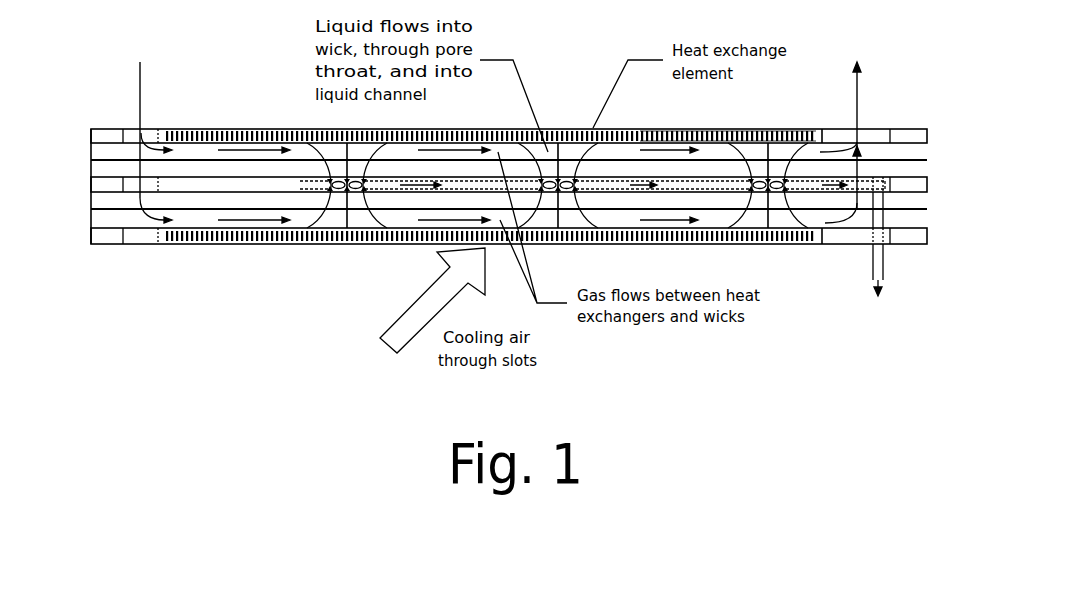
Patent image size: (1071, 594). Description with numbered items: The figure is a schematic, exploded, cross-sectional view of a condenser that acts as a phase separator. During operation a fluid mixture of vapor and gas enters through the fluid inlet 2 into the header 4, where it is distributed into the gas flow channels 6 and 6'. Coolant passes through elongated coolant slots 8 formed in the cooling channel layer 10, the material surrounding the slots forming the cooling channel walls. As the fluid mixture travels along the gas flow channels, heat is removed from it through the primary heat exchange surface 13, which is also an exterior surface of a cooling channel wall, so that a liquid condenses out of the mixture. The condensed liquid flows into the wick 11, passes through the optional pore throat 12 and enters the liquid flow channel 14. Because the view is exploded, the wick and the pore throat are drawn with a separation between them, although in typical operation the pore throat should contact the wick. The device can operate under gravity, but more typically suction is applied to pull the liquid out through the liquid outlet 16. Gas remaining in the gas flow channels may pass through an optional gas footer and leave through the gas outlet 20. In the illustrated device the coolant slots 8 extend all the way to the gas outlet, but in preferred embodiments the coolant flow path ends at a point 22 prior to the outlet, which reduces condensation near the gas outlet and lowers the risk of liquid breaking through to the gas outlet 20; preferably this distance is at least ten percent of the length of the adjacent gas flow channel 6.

The fluid inlet 2 is at (143, 130).
The header 4 is at (133, 188).
The gas flow channel 6 is at (537, 85).
The gas flow channel 6' is at (472, 281).
The elongated coolant slot 8 is at (567, 137).
The cooling channel layer 10 is at (587, 130).
The wick 11 is at (185, 209).
The pore throat 12 is at (375, 177).
The primary heat exchange surface 13 is at (789, 220).
The liquid flow channel 14 is at (397, 188).
The liquid outlet 16 is at (877, 253).
The gas outlet 20 is at (870, 140).
The coolant flow path end point 22 is at (718, 138).